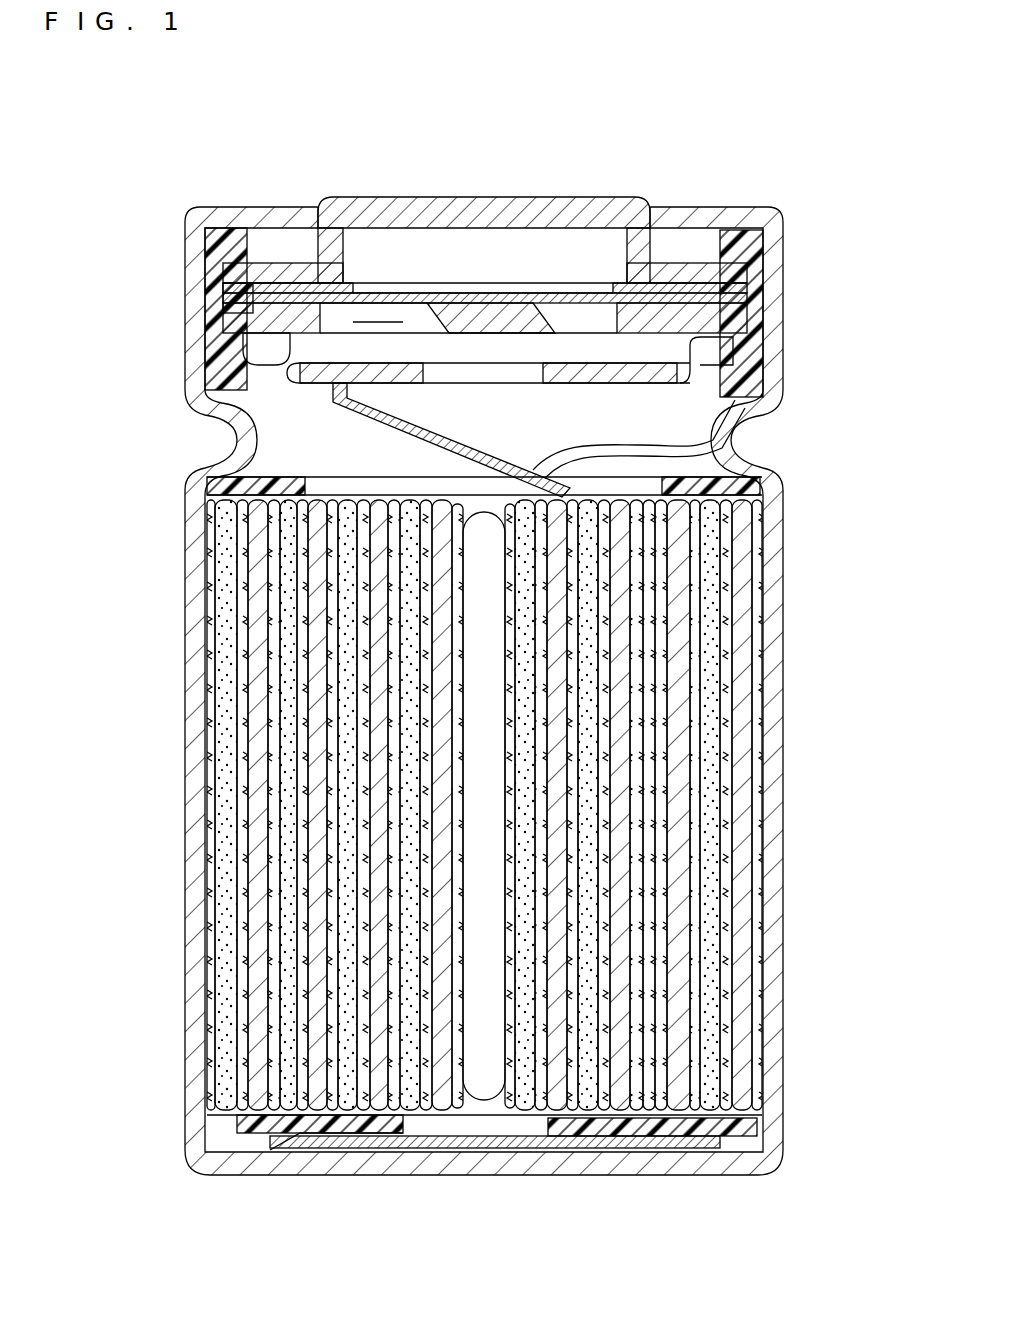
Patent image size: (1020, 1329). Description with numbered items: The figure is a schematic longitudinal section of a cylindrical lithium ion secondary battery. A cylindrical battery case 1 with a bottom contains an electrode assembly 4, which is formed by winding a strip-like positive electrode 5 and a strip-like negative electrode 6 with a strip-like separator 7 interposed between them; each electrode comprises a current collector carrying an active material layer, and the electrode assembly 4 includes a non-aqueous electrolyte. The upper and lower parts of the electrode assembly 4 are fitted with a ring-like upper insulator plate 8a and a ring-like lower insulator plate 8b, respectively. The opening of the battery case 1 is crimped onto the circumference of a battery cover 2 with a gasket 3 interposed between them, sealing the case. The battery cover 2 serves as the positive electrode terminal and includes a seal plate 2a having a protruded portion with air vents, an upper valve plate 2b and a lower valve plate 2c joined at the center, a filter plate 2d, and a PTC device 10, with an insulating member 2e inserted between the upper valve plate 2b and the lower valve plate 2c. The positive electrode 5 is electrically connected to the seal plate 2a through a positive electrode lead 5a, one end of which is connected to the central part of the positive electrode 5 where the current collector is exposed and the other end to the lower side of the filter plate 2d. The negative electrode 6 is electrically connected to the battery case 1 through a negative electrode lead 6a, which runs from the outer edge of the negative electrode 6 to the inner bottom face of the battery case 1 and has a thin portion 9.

The battery case 1 is at (193, 665).
The battery cover 2 is at (480, 262).
The seal plate 2a is at (500, 200).
The upper valve plate 2b is at (690, 278).
The lower valve plate 2c is at (266, 350).
The filter plate 2d is at (712, 366).
The insulating member 2e is at (225, 301).
The gasket 3 is at (757, 301).
The electrode assembly 4 is at (543, 805).
The positive electrode 5 is at (845, 715).
The positive electrode lead 5a is at (713, 440).
The negative electrode 6 is at (745, 848).
The negative electrode lead 6a is at (537, 1142).
The separator 7 is at (733, 735).
The upper insulator plate 8a is at (758, 484).
The lower insulator plate 8b is at (757, 1128).
The thin portion 9 is at (281, 1150).
The PTC device 10 is at (745, 245).